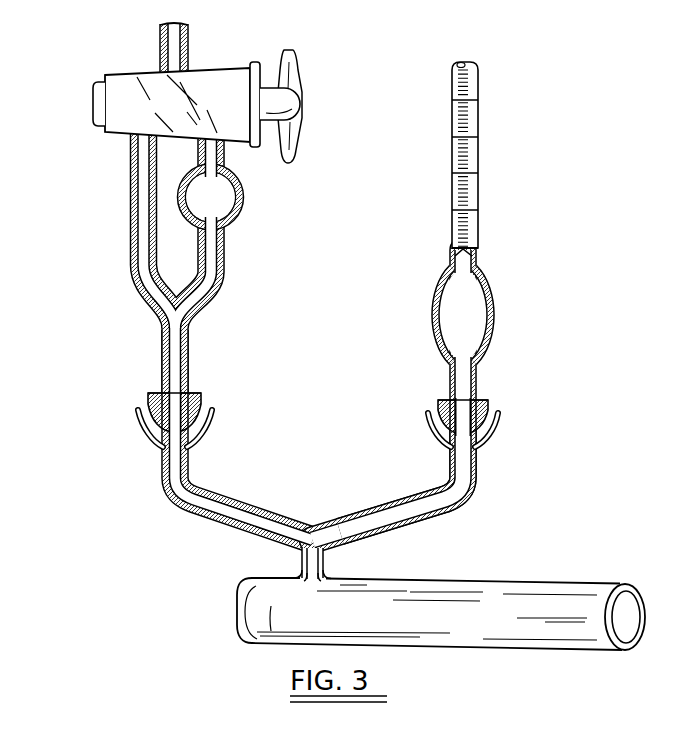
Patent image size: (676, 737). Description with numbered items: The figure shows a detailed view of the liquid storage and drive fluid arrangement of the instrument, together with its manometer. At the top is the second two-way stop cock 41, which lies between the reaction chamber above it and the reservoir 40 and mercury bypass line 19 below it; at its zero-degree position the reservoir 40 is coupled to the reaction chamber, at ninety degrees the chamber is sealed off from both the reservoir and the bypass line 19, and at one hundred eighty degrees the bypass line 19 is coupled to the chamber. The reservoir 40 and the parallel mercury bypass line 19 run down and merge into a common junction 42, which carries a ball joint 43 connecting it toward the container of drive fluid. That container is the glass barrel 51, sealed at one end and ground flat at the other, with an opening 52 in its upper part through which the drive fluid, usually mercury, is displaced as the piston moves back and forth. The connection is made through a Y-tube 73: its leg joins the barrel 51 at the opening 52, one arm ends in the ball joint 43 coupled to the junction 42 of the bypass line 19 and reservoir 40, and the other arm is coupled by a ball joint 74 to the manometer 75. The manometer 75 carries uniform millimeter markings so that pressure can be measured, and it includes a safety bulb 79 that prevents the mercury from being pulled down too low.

The mercury bypass line 19 is at (131, 248).
The reservoir 40 is at (222, 207).
The second two-way stop cock 41 is at (94, 106).
The common junction 42 is at (161, 367).
The ball joint 43 is at (194, 437).
The barrel 51 is at (497, 579).
The opening 52 is at (324, 561).
The Y-tube 73 is at (394, 505).
The ball joint 74 is at (488, 425).
The manometer 75 is at (474, 150).
The safety bulb 79 is at (491, 337).